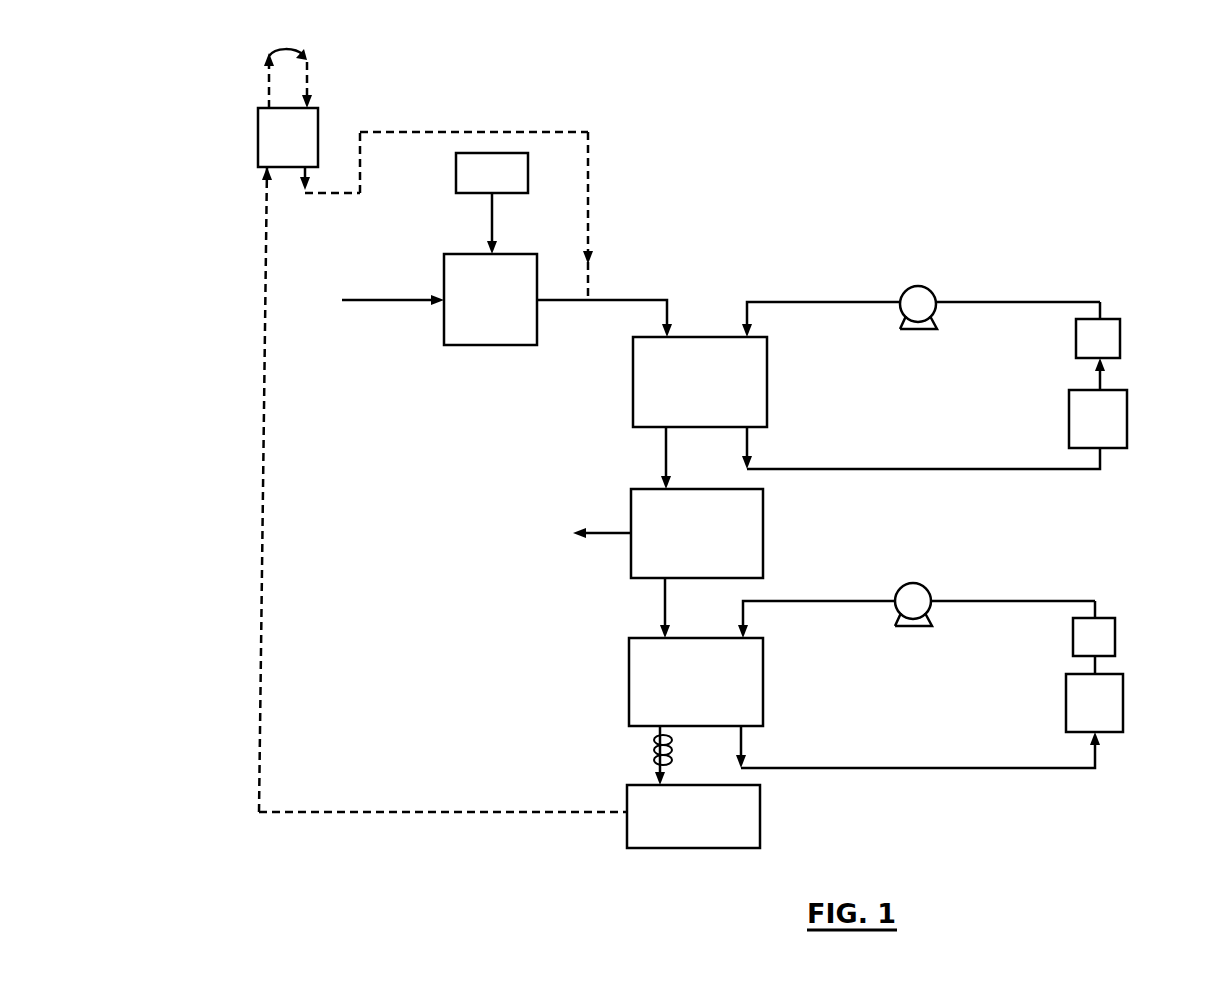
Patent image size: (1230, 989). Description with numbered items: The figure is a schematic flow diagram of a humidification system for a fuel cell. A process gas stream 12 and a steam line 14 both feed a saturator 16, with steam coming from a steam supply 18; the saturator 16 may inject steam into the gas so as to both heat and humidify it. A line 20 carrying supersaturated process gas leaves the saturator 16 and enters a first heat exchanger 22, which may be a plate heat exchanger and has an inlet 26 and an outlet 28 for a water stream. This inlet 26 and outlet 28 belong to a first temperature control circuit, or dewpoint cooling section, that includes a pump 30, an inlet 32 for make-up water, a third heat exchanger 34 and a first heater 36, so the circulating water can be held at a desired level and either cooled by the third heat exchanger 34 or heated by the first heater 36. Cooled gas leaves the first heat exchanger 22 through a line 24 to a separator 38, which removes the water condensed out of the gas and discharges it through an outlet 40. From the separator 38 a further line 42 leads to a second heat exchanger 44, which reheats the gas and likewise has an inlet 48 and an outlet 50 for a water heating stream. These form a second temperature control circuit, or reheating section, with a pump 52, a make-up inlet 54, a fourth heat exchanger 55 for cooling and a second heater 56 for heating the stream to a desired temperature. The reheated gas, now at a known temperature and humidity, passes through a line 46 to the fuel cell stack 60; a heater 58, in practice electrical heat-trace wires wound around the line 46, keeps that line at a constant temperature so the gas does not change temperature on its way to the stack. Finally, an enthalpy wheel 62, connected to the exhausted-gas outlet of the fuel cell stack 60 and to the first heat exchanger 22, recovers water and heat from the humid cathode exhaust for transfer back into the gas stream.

The process gas stream 12 is at (393, 300).
The steam line 14 is at (492, 218).
The saturator 16 is at (480, 345).
The steam supply 18 is at (456, 177).
The line 20 is at (637, 300).
The first heat exchanger 22 is at (633, 372).
The line 24 is at (665, 447).
The inlet 26 is at (816, 302).
The outlet 28 is at (802, 470).
The pump 30 is at (922, 287).
The inlet for make-up water 32 is at (1103, 313).
The third heat exchanger 34 is at (1120, 338).
The first heater 36 is at (1127, 416).
The separator 38 is at (631, 564).
The discharge or outlet 40 is at (603, 532).
The further line 42 is at (663, 612).
The second heat exchanger 44 is at (629, 688).
The line 46 is at (652, 731).
The inlet 48 is at (812, 601).
The outlet 50 is at (835, 769).
The pump 52 is at (917, 584).
The make-up inlet 54 is at (1098, 613).
The fourth heat exchanger 55 is at (1115, 637).
The second heater 56 is at (1123, 702).
The heater 58 is at (652, 764).
The fuel cell stack 60 is at (627, 832).
The enthalpy wheel 62 is at (258, 128).